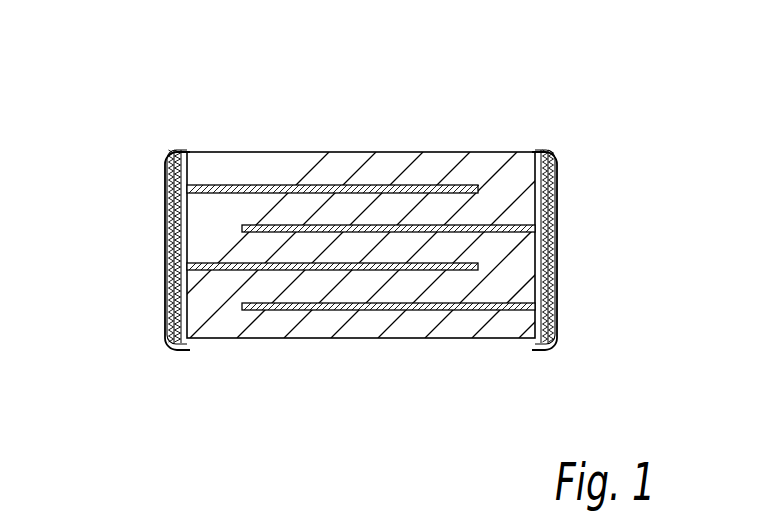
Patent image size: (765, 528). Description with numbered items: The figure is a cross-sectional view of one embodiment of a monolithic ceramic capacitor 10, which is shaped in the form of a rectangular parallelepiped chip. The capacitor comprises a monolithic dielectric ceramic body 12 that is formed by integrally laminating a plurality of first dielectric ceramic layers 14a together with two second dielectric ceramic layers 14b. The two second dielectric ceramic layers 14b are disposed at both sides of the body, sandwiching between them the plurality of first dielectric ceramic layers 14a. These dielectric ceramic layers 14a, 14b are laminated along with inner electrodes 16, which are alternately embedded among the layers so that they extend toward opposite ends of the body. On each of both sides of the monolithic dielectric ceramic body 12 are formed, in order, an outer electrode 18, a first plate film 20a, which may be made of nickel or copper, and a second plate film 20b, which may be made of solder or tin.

The monolithic ceramic capacitor 10 is at (122, 47).
The monolithic dielectric ceramic body 12 is at (297, 147).
The first dielectric ceramic layer 14a is at (452, 205).
The second dielectric ceramic layer 14b is at (397, 163).
The inner electrode 16 is at (276, 306).
The outer electrode 18 is at (167, 182).
The first plate film 20a is at (167, 243).
The second plate film 20b is at (167, 297).